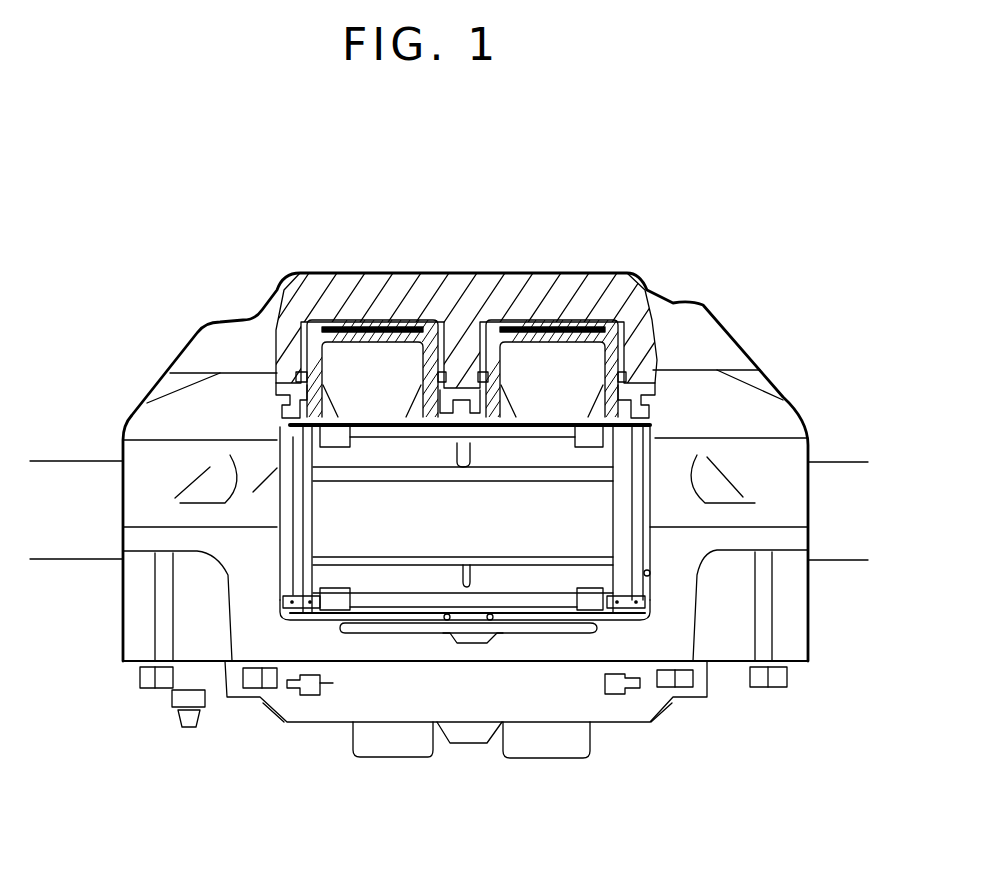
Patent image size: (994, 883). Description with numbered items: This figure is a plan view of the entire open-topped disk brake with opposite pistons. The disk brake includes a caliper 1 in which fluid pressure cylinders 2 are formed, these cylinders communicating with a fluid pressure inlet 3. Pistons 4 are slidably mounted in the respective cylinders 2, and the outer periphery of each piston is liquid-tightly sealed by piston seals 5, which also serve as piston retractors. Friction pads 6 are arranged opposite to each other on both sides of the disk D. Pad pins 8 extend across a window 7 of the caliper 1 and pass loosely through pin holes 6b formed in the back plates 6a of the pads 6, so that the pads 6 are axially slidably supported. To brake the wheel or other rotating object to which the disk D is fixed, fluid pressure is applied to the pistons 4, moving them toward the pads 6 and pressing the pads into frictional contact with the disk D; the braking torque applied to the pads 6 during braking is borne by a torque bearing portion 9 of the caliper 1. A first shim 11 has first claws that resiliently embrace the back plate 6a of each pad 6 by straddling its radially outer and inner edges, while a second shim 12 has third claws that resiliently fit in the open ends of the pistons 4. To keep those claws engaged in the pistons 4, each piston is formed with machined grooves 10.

The caliper 1 is at (745, 397).
The fluid pressure cylinders 2 is at (485, 322).
The fluid pressure inlet 3 is at (405, 752).
The pistons 4 is at (557, 340).
The piston seals 5 is at (657, 383).
The friction pads 6 is at (337, 457).
The back plates 6a is at (375, 605).
The pin holes 6b is at (650, 592).
The window 7 is at (577, 505).
The pad pins 8 is at (623, 620).
The torque bearing portion 9 is at (649, 576).
The machined grooves 10 is at (340, 320).
The first shim 11 is at (307, 377).
The second shim 12 is at (378, 418).
The disk D is at (843, 481).